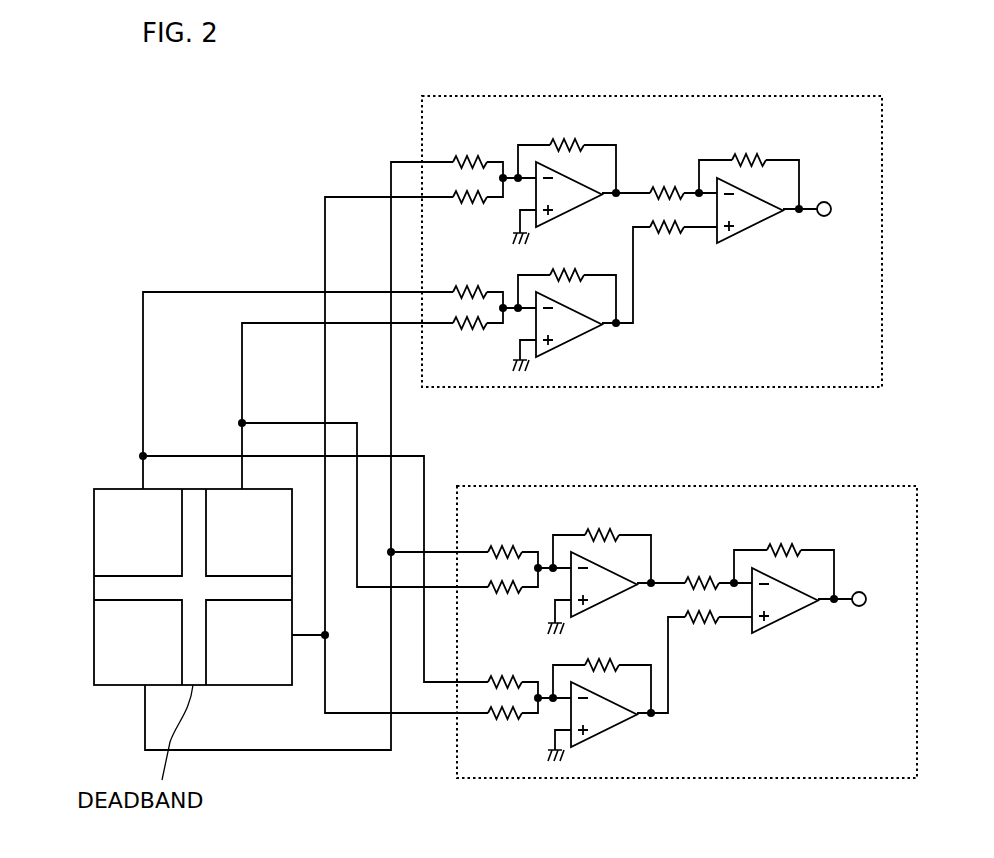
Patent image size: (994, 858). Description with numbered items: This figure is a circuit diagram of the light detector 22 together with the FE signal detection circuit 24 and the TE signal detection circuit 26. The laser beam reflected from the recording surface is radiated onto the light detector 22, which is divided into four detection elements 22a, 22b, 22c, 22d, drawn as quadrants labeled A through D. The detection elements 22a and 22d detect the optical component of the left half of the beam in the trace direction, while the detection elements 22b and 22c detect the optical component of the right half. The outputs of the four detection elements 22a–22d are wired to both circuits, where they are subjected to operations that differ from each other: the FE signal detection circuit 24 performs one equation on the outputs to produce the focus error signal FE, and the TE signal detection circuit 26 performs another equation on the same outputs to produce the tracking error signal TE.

The light detector 22 is at (117, 480).
The detection element 22a is at (94, 547).
The detection element 22b is at (94, 660).
The detection element 22c is at (259, 685).
The detection element 22d is at (257, 489).
The FE signal detection circuit 24 is at (833, 741).
The TE signal detection circuit 26 is at (798, 351).